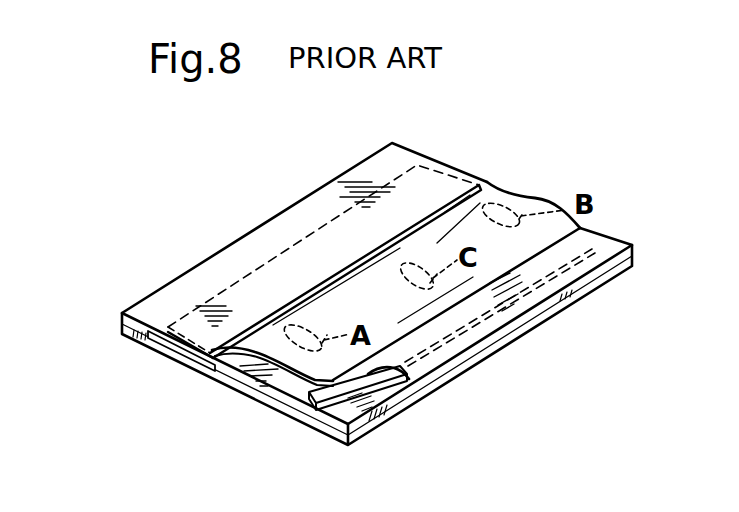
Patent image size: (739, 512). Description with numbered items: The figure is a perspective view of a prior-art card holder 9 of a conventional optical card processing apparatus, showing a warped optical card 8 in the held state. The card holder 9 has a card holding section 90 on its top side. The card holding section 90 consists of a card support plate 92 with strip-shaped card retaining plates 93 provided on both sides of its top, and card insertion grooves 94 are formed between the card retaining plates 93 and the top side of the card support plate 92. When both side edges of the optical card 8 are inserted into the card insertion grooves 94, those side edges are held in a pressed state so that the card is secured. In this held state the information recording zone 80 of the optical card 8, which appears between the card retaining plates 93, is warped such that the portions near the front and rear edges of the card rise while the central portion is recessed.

The optical card 8 is at (538, 210).
The card holder 9 is at (307, 207).
The information recording zone 80 is at (457, 218).
The card holding section 90 is at (151, 302).
The card support plate 92 is at (230, 380).
The card retaining plates 93 is at (128, 336).
The card insertion grooves 94 is at (174, 353).